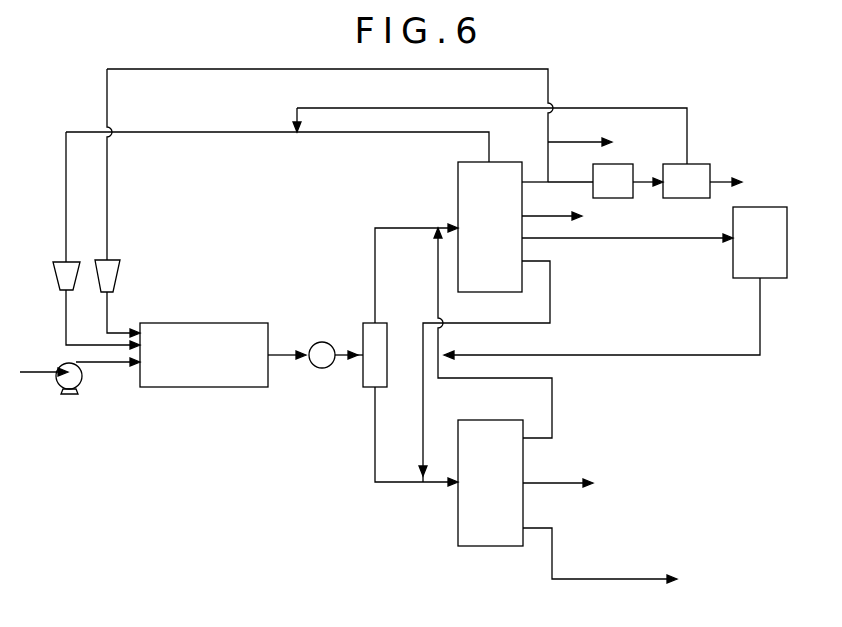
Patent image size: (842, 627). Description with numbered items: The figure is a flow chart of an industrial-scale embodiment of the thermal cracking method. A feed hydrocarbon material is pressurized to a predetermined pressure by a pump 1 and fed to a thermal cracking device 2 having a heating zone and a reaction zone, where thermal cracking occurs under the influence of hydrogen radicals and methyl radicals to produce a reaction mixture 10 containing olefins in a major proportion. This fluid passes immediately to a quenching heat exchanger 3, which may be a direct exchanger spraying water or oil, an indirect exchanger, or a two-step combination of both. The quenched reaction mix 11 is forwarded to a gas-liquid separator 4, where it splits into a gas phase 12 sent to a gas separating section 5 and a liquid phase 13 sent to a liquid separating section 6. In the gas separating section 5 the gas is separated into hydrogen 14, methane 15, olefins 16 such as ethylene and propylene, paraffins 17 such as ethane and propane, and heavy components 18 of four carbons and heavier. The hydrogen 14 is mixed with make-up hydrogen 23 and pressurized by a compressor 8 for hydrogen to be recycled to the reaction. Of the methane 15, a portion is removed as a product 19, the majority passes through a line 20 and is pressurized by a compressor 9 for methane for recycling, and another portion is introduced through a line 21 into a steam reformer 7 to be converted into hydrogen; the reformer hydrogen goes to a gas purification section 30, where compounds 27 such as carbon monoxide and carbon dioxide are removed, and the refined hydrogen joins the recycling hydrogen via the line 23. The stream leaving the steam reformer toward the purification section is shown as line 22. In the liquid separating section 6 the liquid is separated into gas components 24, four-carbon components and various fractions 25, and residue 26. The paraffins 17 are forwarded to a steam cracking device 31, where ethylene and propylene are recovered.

The pump 1 is at (70, 383).
The thermal cracking device 2 is at (207, 376).
The quenching heat exchanger 3 is at (322, 350).
The gas-liquid separator 4 is at (378, 346).
The gas separating section 5 is at (468, 186).
The liquid separating section 6 is at (467, 517).
The steam reformer 7 is at (617, 174).
The compressor for hydrogen 8 is at (68, 273).
The compressor for methane 9 is at (113, 273).
The reaction mixture 10 is at (284, 360).
The quenched reaction mix 11 is at (342, 360).
The gas phase 12 is at (375, 291).
The liquid phase 13 is at (378, 455).
The hydrogen 14 is at (292, 147).
The methane 15 is at (535, 170).
The olefins 16 is at (566, 217).
The paraffins 17 is at (627, 250).
The heavy components 18 is at (500, 371).
The product 19 is at (580, 131).
The line 20 is at (330, 151).
The line 21 is at (571, 195).
The line 22 is at (648, 174).
The make-up hydrogen 23 is at (490, 124).
The gas components 24 is at (508, 333).
The C4 components and various fractions 25 is at (574, 484).
The residue 26 is at (615, 560).
The compound 27 is at (727, 172).
The gas purification section 30 is at (700, 175).
The steam cracking device 31 is at (757, 219).